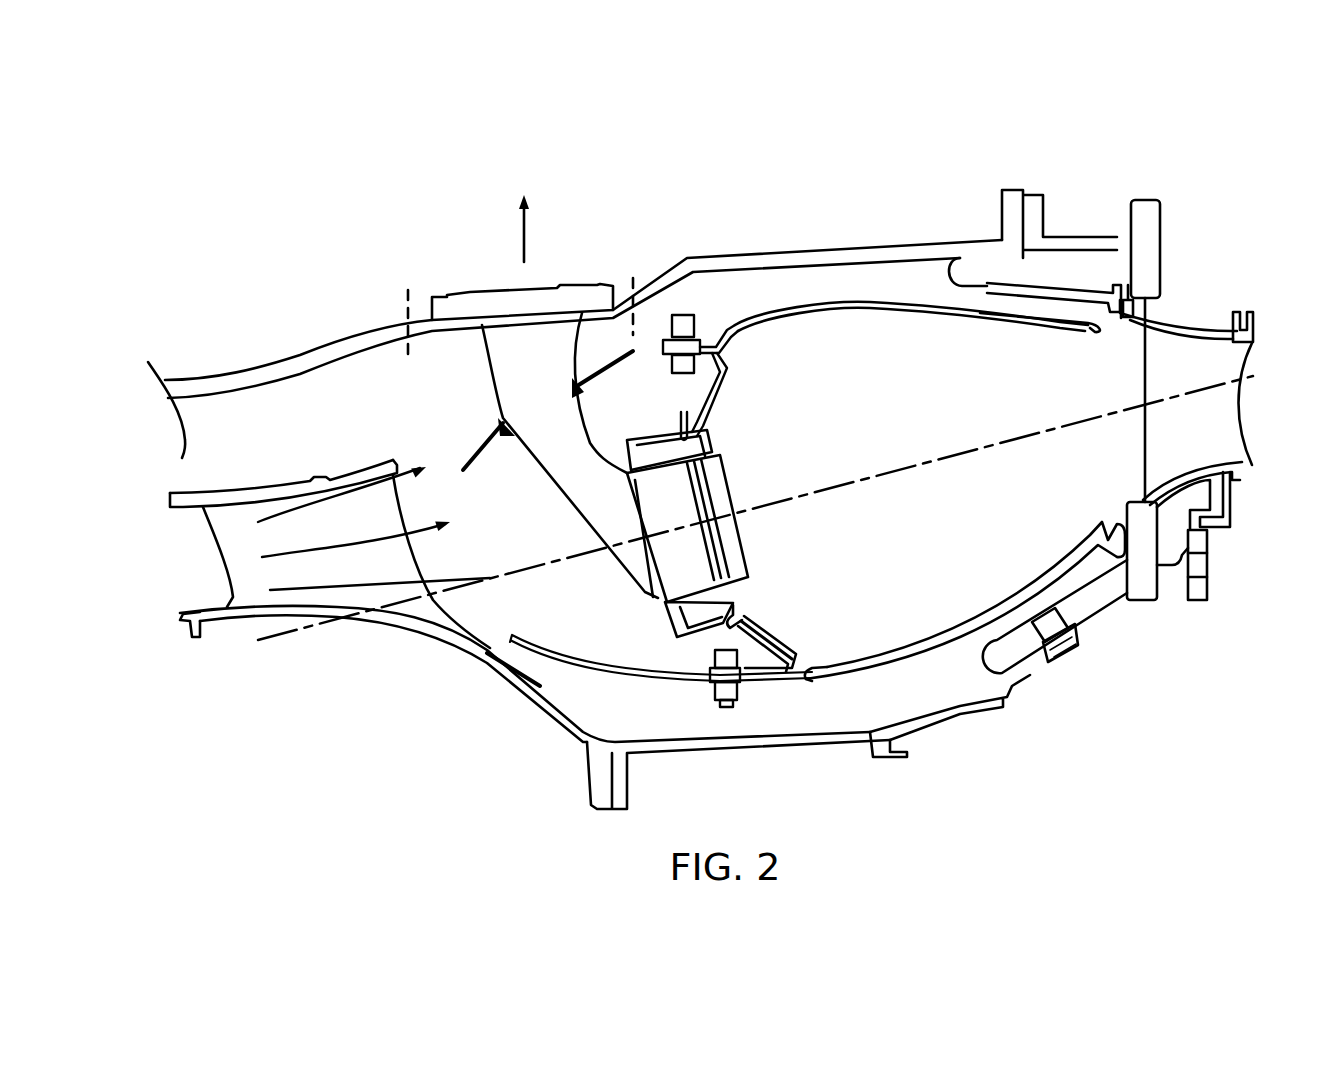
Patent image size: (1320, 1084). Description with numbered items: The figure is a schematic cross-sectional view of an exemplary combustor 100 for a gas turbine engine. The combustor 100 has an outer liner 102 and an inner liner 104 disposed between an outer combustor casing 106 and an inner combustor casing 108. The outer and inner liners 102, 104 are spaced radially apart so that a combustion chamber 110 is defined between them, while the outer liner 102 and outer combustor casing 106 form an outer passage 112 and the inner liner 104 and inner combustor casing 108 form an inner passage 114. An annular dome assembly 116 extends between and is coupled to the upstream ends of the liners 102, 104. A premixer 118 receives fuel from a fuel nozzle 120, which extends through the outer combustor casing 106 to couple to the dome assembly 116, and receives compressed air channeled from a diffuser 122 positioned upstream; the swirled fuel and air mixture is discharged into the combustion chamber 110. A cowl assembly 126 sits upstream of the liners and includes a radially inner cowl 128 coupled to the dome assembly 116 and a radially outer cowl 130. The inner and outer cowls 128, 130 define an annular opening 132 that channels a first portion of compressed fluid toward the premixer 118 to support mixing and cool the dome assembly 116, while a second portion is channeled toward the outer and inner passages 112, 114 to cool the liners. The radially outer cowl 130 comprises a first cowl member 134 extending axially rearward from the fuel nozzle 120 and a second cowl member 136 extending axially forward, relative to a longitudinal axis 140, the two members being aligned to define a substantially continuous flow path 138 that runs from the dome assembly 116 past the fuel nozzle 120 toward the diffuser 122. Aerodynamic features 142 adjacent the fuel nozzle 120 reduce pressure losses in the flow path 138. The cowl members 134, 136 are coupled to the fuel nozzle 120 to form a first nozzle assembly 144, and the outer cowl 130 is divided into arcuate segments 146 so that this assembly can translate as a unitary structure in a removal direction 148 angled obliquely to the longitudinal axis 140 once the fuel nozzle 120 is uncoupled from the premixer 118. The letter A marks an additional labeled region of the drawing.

The combustor 100 is at (366, 148).
The outer liner 102 is at (1020, 312).
The inner liner 104 is at (1077, 570).
The outer combustor casing 106 is at (990, 242).
The inner combustor casing 108 is at (1028, 682).
The combustion chamber 110 is at (899, 433).
The outer passage 112 is at (849, 291).
The inner passage 114 is at (917, 676).
The dome assembly 116 is at (748, 392).
The premixer 118 is at (727, 490).
The fuel nozzle 120 is at (495, 416).
The diffuser 122 is at (245, 492).
The cowl assembly 126 is at (654, 706).
The radially inner cowl 128 is at (602, 673).
The radially outer cowl 130 is at (450, 450).
The annular opening 132 is at (510, 653).
The first cowl member 134 is at (492, 435).
The second cowl member 136 is at (618, 372).
The flow path 138 is at (375, 392).
The longitudinal axis 140 is at (283, 640).
The aerodynamic features 142 is at (508, 433).
The first nozzle assembly 144 is at (484, 270).
The arcuate segments 146 is at (482, 397).
The removal direction 148 is at (530, 230).
The airfoil A is at (258, 548).